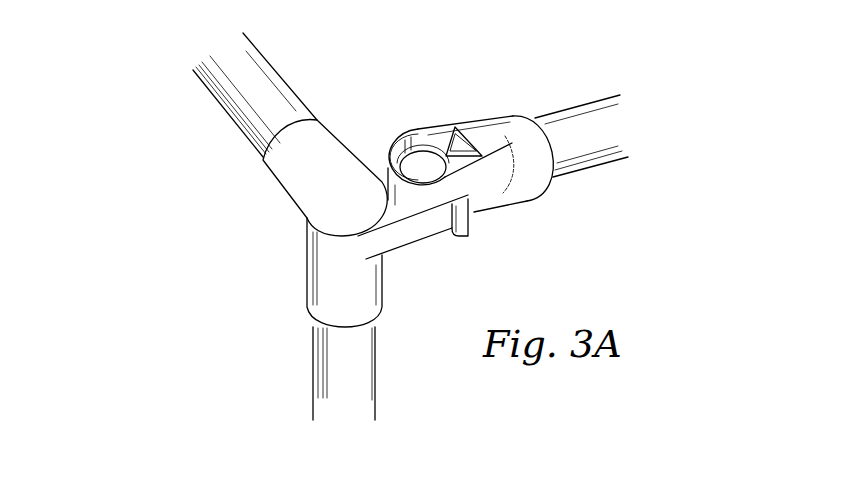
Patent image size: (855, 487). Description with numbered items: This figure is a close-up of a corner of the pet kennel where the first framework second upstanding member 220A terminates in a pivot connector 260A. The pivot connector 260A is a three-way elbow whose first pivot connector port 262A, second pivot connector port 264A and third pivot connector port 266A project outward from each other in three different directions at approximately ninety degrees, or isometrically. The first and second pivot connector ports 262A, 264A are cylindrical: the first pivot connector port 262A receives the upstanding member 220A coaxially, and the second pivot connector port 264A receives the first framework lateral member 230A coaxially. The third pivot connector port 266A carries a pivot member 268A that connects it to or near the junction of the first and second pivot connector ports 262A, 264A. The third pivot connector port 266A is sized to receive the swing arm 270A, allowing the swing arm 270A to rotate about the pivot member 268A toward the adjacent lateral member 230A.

The first framework second upstanding member 220A is at (333, 385).
The first framework lateral member 230A is at (268, 85).
The pivot connector 260A is at (275, 240).
The first pivot connector port 262A is at (327, 278).
The second pivot connector port 264A is at (323, 148).
The third pivot connector port 266A is at (500, 192).
The pivot member 268A is at (420, 165).
The swing arm 270A is at (578, 120).